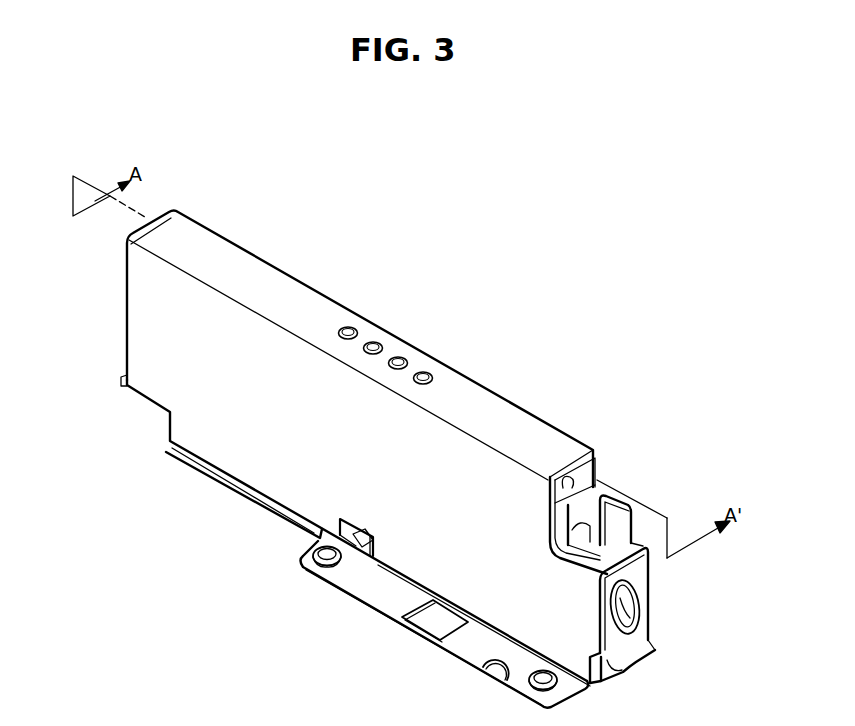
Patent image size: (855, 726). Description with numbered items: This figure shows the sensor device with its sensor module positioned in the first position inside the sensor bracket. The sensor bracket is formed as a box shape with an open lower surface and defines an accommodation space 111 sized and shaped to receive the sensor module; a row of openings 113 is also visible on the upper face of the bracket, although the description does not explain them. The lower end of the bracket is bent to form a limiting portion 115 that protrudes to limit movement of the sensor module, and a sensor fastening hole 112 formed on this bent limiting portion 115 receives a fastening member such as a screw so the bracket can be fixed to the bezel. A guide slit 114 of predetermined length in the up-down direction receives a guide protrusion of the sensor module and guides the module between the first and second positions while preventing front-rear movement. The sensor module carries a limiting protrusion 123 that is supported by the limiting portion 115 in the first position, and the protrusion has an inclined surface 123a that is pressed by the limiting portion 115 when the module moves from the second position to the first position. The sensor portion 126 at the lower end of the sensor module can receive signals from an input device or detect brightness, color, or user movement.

The accommodation space 111 is at (596, 477).
The sensor fastening hole 112 is at (300, 544).
The through holes 113 is at (397, 358).
The guide slit 114 is at (627, 628).
The limiting portion 115 is at (396, 596).
The limiting protrusion 123 is at (350, 553).
The inclined surface 123a is at (354, 543).
The sensor portion 126 is at (420, 638).